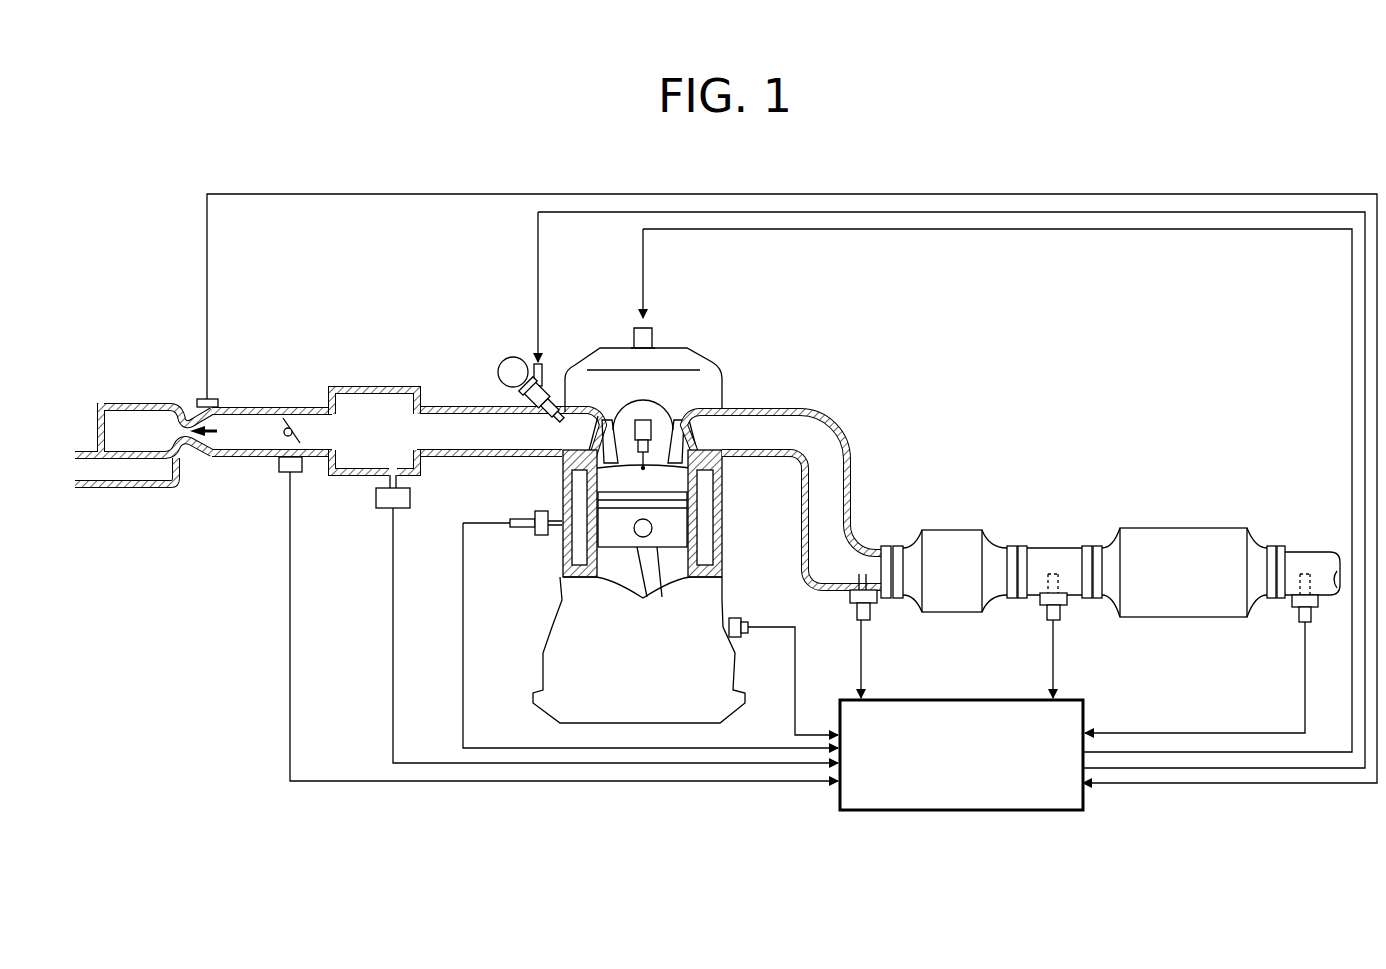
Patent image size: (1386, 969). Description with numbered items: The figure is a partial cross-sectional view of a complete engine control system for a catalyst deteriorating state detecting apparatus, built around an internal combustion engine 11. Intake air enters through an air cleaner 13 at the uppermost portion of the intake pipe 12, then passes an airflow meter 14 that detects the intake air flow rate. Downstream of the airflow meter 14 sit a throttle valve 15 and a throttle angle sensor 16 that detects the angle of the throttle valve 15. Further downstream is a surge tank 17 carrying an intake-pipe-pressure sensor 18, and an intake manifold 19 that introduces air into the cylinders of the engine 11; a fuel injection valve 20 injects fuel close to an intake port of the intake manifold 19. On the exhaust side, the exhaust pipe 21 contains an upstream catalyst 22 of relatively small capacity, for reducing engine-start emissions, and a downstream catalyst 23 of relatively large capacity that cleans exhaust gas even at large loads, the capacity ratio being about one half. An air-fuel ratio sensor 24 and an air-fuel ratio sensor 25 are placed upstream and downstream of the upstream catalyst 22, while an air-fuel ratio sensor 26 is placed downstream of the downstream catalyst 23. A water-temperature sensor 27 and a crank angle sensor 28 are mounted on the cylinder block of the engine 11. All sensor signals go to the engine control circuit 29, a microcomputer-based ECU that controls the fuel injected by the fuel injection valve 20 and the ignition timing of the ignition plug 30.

The internal combustion engine 11 is at (715, 362).
The intake pipe 12 is at (233, 405).
The air cleaner 13 is at (147, 452).
The airflow meter 14 is at (203, 401).
The throttle valve 15 is at (283, 418).
The throttle angle sensor 16 is at (280, 473).
The surge tank 17 is at (370, 387).
The intake-pipe-pressure sensor 18 is at (375, 498).
The intake manifold 19 is at (488, 458).
The fuel injection valve 20 is at (512, 405).
The exhaust pipe 21 is at (800, 408).
The upstream catalyst 22 is at (952, 530).
The downstream catalyst 23 is at (1180, 528).
The air-fuel ratio sensor 24 is at (870, 613).
The air-fuel ratio sensor 25 is at (1062, 613).
The air-fuel ratio sensor 26 is at (1293, 612).
The water-temperature sensor 27 is at (538, 537).
The crank angle sensor 28 is at (740, 613).
The engine control circuit 29 is at (1057, 812).
The ignition plug 30 is at (653, 442).